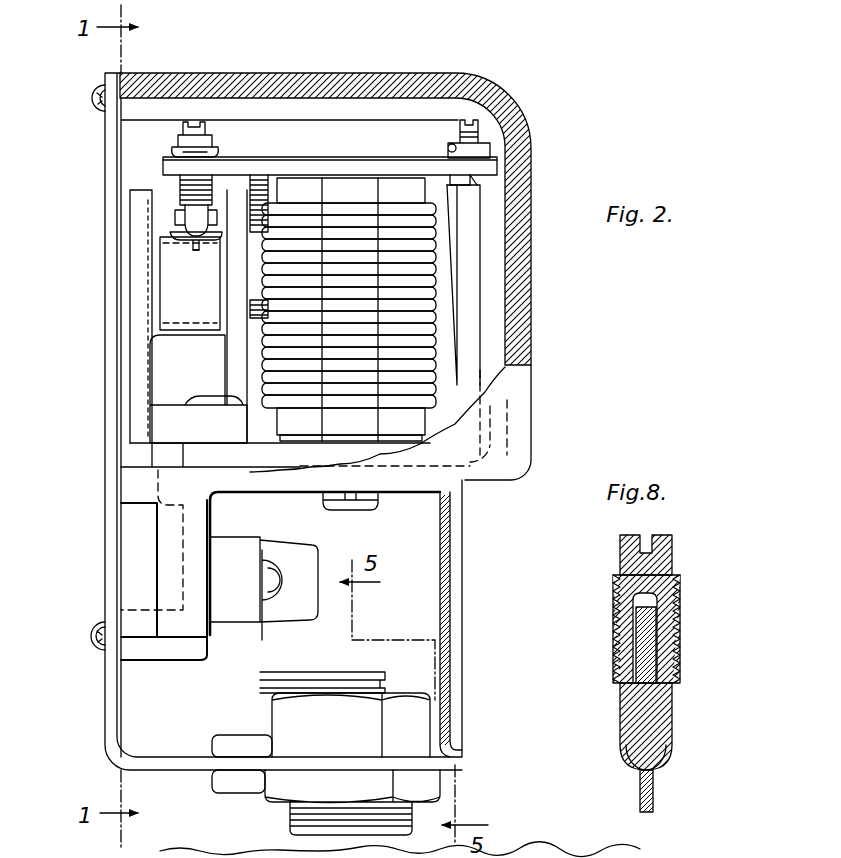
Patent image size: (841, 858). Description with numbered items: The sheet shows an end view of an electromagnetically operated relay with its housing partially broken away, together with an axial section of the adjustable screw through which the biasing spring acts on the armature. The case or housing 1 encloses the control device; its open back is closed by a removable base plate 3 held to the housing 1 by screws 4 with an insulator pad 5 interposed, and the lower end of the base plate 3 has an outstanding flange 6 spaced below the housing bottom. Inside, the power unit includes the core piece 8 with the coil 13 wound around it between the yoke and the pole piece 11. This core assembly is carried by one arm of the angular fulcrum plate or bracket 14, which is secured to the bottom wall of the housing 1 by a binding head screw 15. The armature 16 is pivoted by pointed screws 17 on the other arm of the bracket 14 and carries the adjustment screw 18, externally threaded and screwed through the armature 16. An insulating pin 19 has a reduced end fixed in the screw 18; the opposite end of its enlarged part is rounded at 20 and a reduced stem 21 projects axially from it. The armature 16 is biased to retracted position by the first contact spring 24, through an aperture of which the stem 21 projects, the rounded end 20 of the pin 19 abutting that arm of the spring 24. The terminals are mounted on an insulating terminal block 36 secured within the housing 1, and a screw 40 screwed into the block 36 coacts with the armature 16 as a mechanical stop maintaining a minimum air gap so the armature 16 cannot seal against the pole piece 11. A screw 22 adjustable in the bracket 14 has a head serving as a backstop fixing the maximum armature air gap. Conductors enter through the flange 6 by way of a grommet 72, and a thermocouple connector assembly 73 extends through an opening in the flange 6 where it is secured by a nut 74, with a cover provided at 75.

In FIG. 2, the case or housing 1 is at (536, 168).
In FIG. 2, the base plate 3 is at (110, 225).
In FIG. 2, the screws 4 is at (93, 106).
In FIG. 2, the insulator pad 5 is at (117, 152).
In FIG. 2, the outstanding flange 6 is at (192, 771).
In FIG. 2, the core piece 8 is at (384, 217).
In FIG. 2, the pole piece 11 is at (305, 183).
In FIG. 2, the coil 13 is at (466, 285).
In FIG. 2, the angular fulcrum plate or bracket 14 is at (472, 327).
In FIG. 2, the binding head screw 15 is at (365, 506).
In FIG. 2, the armature 16 is at (340, 160).
In FIG. 2, the pointed screws 17 is at (513, 122).
In FIG. 2, the adjustment screw 18 is at (197, 187).
In FIG. 8, the adjustment screw 18 is at (666, 575).
In FIG. 2, the insulating pin 19 is at (193, 218).
In FIG. 8, the insulating pin 19 is at (660, 711).
In FIG. 8, the rounded end 20 is at (672, 765).
In FIG. 2, the reduced stem 21 is at (168, 284).
In FIG. 8, the reduced stem 21 is at (640, 791).
In FIG. 2, the screw 22 is at (442, 152).
In FIG. 2, the first contact spring 24 is at (160, 288).
In FIG. 2, the insulating terminal block 36 is at (247, 285).
In FIG. 2, the screw 40 is at (258, 186).
In FIG. 2, the grommet 72 is at (237, 742).
In FIG. 2, the thermocouple connector assembly 73 is at (425, 787).
In FIG. 2, the nut 74 is at (415, 712).
In FIG. 2, the cover 75 is at (452, 577).